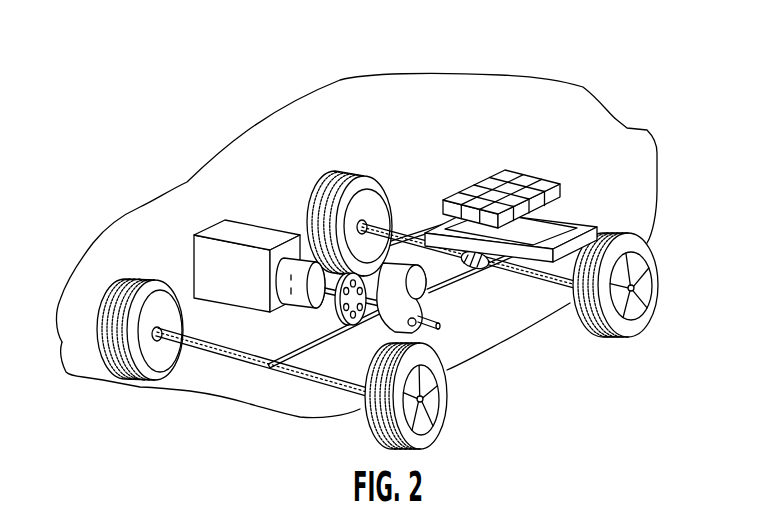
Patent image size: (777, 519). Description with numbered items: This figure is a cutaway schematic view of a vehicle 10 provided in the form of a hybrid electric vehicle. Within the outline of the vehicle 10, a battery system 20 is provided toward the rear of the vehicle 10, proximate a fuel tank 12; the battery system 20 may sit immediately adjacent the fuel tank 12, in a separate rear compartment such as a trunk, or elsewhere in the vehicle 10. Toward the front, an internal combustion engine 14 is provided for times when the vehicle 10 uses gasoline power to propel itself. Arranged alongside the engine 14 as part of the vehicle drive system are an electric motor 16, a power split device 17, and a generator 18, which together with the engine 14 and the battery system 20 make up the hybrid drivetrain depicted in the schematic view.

The vehicle 10 is at (608, 95).
The fuel tank 12 is at (572, 233).
The internal combustion engine 14 is at (215, 230).
The electric motor 16 is at (300, 265).
The power split device 17 is at (337, 305).
The generator 18 is at (428, 318).
The battery system 20 is at (494, 163).